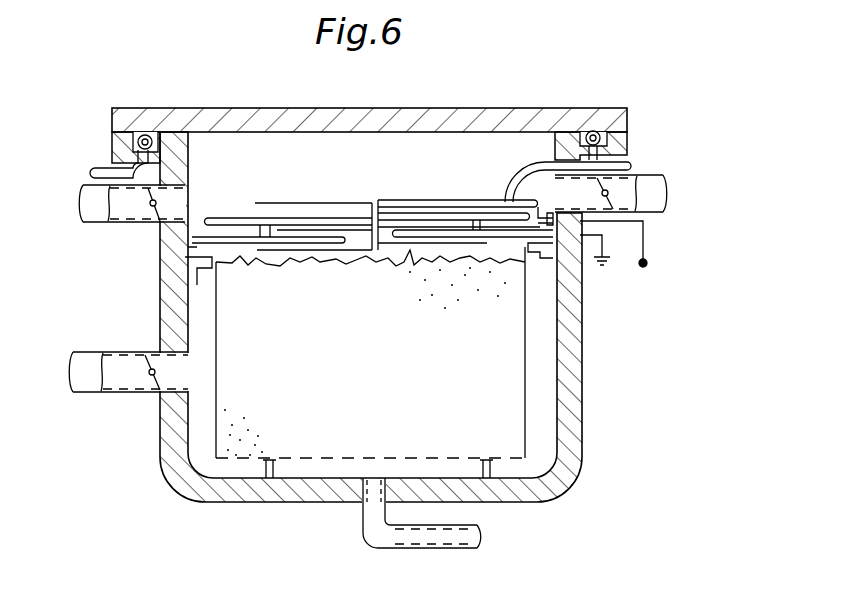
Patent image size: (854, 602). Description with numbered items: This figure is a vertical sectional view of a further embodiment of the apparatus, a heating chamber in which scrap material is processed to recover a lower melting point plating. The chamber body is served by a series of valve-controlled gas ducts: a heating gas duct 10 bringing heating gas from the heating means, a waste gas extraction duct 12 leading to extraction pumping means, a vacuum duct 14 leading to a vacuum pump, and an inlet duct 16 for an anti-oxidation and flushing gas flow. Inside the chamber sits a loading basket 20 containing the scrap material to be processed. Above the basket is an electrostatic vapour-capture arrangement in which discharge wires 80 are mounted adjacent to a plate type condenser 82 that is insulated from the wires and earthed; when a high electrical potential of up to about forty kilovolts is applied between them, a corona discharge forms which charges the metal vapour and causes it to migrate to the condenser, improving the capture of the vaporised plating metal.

The heating gas duct 10 is at (135, 376).
The waste gas extraction duct 12 is at (102, 224).
The vacuum duct 14 is at (664, 189).
The inlet duct 16 is at (480, 538).
The loading basket 20 is at (527, 398).
The discharge wires 80 is at (416, 200).
The plate type condenser 82 is at (196, 257).